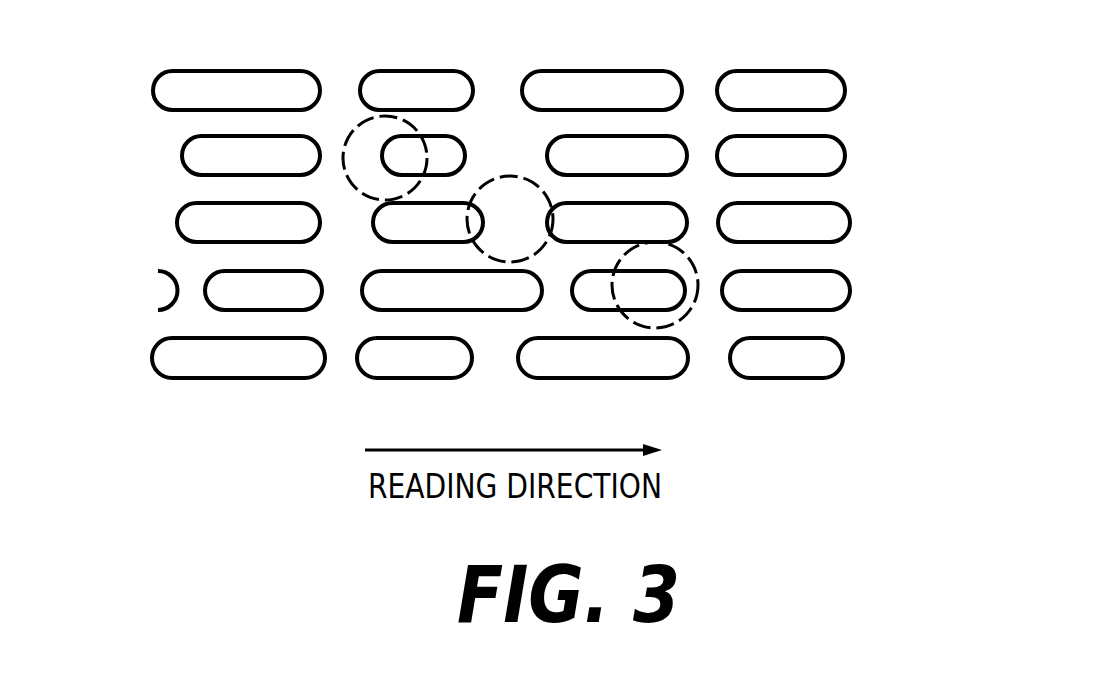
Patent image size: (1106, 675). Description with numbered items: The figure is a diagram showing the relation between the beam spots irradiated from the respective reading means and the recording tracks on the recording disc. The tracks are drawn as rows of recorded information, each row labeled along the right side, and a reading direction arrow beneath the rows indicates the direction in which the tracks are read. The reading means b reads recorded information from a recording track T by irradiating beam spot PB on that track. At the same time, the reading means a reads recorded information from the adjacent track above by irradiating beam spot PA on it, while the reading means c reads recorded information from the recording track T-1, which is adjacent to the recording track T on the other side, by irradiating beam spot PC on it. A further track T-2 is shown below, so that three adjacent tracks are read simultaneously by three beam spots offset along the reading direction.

The beam spot PA is at (362, 122).
The beam spot PB is at (523, 176).
The beam spot PC is at (693, 310).
The recording track T is at (878, 218).
The recording track T-1 is at (878, 287).
The scan line at time T-2 is at (878, 353).